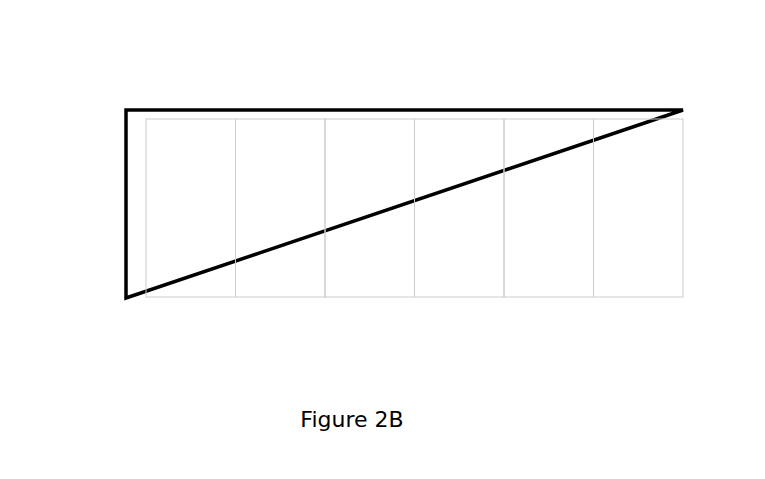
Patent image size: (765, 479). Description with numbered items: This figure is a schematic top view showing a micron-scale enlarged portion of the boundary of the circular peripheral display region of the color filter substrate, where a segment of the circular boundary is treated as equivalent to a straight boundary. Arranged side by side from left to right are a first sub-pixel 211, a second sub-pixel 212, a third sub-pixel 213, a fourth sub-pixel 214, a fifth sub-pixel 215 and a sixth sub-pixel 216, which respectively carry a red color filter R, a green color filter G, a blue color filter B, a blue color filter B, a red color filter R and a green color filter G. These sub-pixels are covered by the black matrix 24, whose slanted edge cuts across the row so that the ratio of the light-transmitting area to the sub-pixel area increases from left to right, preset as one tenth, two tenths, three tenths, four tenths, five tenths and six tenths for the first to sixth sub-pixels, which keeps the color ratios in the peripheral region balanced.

The black matrix 24 is at (125, 198).
The first sub-pixel 211 is at (182, 147).
The second sub-pixel 212 is at (276, 264).
The third sub-pixel 213 is at (378, 147).
The fourth sub-pixel 214 is at (555, 142).
The fifth sub-pixel 215 is at (471, 258).
The sixth sub-pixel 216 is at (649, 258).